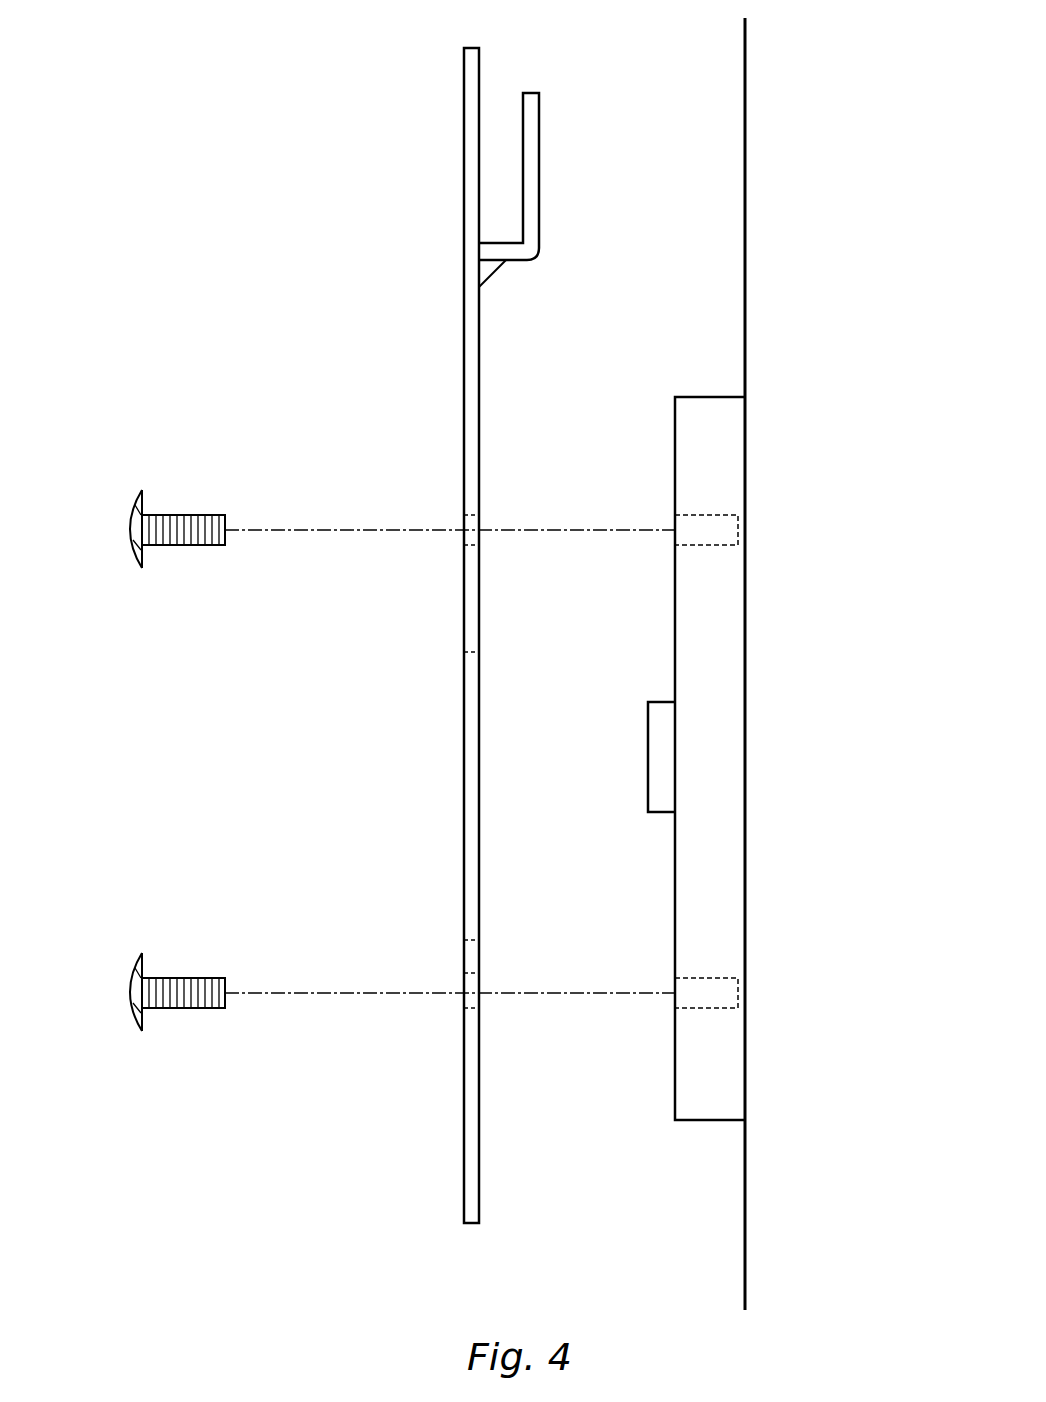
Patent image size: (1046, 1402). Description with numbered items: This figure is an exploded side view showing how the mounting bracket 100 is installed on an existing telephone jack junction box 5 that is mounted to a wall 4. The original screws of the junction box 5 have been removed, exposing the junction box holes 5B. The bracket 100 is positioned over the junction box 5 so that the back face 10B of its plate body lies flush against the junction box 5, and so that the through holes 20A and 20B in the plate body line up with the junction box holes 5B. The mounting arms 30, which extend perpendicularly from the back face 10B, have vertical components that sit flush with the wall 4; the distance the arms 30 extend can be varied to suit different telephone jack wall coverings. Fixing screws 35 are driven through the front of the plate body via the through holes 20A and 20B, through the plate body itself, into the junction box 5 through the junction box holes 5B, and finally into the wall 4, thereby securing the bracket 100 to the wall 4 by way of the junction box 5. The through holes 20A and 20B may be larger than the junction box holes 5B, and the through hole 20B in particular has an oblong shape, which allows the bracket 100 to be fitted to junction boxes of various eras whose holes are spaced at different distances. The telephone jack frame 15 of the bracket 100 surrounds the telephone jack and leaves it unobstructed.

The wall 4 is at (852, 312).
The junction box 5 is at (700, 395).
The junction box holes 5B is at (720, 515).
The back face 10B is at (469, 635).
The telephone jack frame 15 is at (462, 808).
The through hole 20A is at (462, 518).
The through hole 20B is at (462, 1005).
The mounting arms 30 is at (540, 196).
The fixing screws 35 is at (120, 560).
The mounting bracket 100 is at (480, 635).